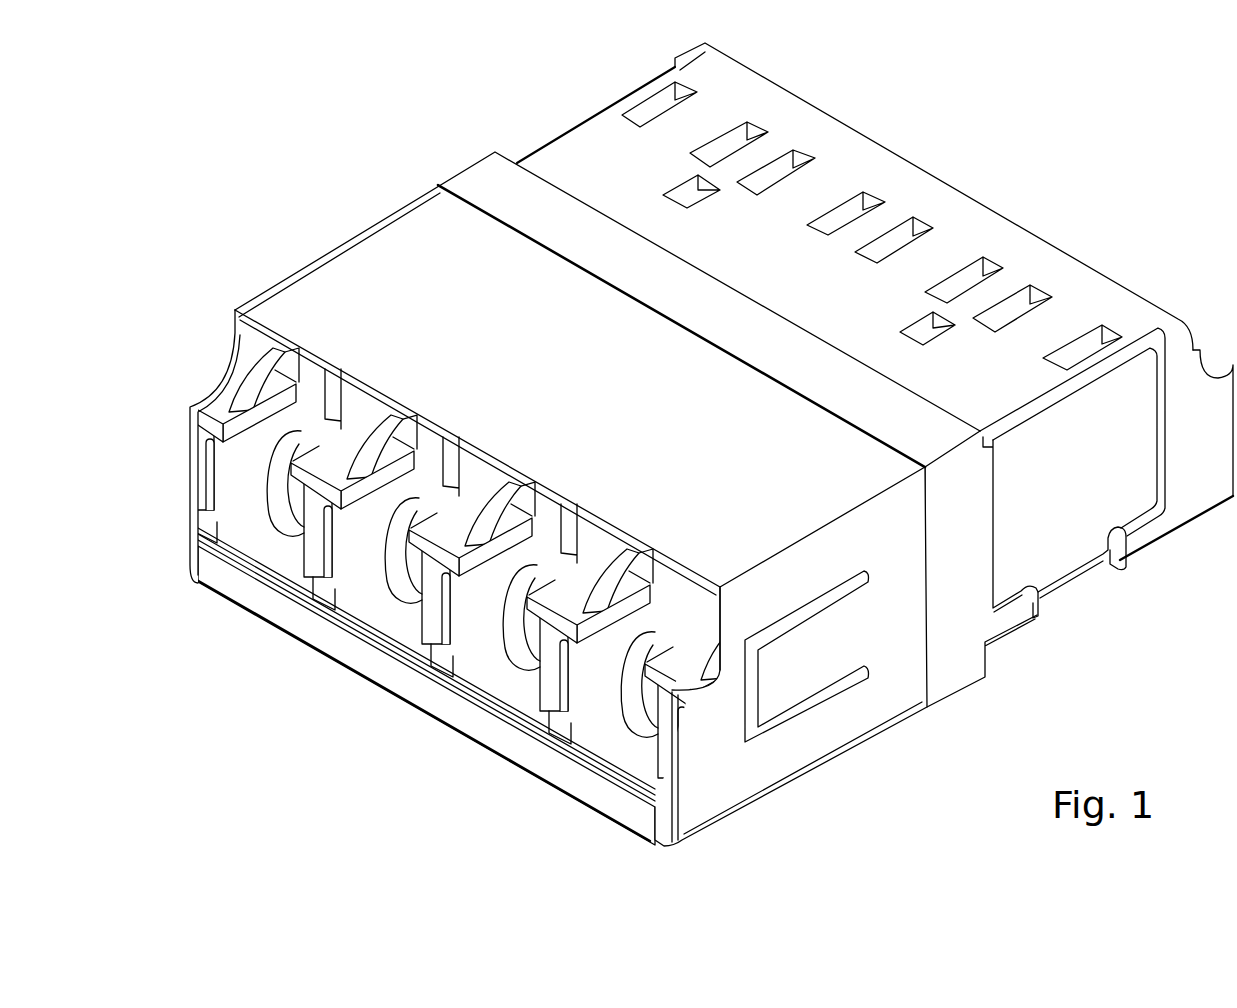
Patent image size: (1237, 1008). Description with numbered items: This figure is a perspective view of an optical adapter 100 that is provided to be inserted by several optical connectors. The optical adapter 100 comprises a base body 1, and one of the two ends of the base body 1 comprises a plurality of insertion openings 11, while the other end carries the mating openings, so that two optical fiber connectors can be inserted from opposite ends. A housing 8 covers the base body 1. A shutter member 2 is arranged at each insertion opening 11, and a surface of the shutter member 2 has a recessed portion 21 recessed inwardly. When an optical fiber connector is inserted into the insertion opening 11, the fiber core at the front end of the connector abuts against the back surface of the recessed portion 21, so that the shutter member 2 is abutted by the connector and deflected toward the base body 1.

The optical adapter 100 is at (666, 444).
The base body 1 is at (908, 207).
The insertion opening 11 is at (232, 457).
The housing 8 is at (365, 280).
The shutter member 2 is at (318, 592).
The recessed portion 21 is at (382, 550).